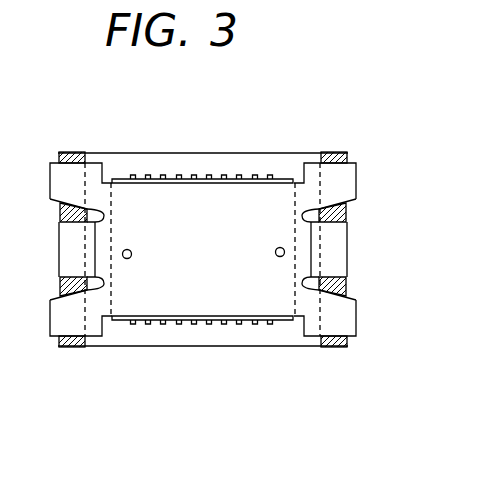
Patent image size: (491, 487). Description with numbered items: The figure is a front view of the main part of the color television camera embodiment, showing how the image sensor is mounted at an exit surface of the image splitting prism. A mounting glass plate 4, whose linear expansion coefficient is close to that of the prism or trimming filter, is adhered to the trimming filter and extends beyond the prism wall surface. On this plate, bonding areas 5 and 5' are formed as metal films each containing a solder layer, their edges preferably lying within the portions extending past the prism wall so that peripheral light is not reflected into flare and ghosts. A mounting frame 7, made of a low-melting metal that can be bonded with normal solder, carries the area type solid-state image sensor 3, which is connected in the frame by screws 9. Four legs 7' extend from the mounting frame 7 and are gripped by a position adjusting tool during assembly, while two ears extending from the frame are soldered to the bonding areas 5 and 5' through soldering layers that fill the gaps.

The solid-state image sensor 3 is at (141, 178).
The mounting glass plate 4 is at (288, 163).
The bonding area 5 is at (59, 248).
The bonding area 5' is at (351, 249).
The mounting frame 7 is at (202, 219).
The legs 7' is at (210, 254).
The screws 9 is at (128, 259).